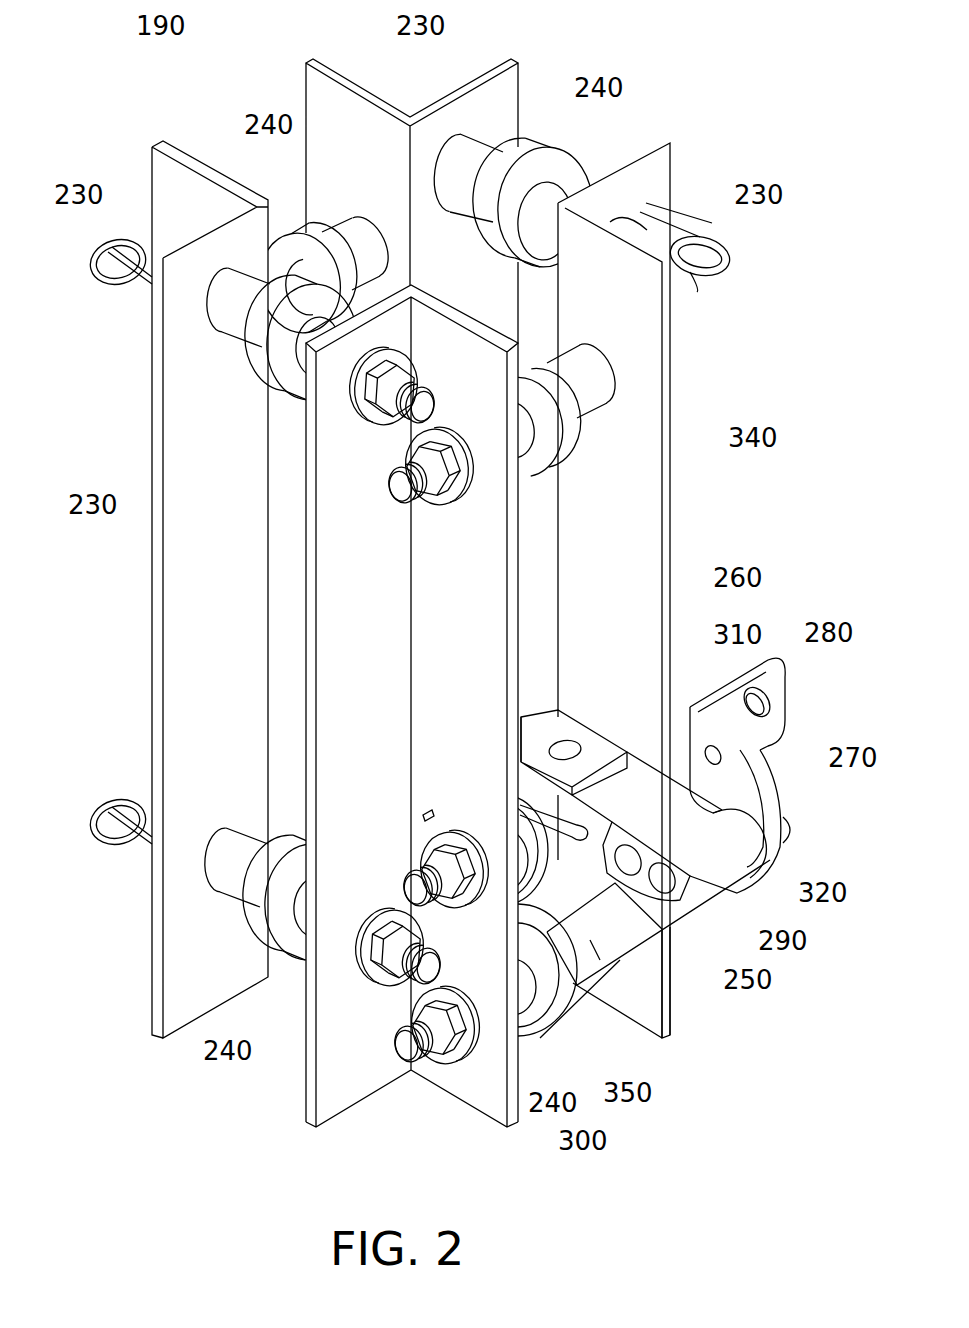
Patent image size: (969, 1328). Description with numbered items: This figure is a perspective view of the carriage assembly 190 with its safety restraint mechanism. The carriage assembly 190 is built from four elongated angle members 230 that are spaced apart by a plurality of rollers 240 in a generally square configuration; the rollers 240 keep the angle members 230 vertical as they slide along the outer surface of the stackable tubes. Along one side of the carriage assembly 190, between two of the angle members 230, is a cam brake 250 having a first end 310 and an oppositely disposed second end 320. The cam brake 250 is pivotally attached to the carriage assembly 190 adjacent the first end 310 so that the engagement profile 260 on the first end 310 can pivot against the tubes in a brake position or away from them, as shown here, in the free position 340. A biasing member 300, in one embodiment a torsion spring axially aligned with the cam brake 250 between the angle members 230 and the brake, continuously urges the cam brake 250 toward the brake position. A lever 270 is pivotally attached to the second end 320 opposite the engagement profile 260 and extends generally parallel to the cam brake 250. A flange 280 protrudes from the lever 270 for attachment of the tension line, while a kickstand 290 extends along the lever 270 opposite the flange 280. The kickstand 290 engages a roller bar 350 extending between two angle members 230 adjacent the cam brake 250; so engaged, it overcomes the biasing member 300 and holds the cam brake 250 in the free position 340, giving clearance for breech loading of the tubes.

The carriage assembly 190 is at (165, 42).
The elongated angle member 230 is at (730, 194).
The roller 240 is at (555, 1085).
The cam brake 250 is at (605, 945).
The engagement profile 260 is at (530, 728).
The lever 270 is at (753, 782).
The flange 280 is at (777, 680).
The kickstand 290 is at (663, 920).
The biasing member 300 is at (545, 865).
The first end 310 is at (558, 732).
The second end 320 is at (710, 870).
The free position 340 is at (750, 455).
The roller bar 350 is at (600, 955).